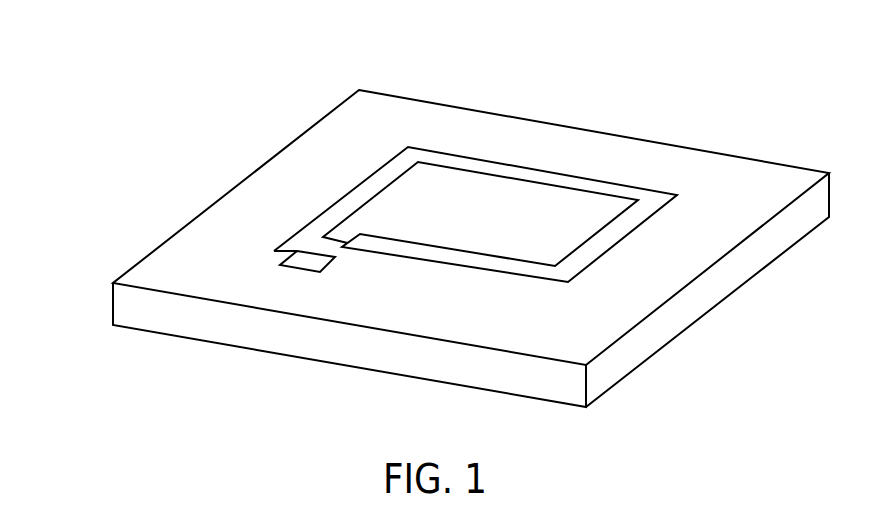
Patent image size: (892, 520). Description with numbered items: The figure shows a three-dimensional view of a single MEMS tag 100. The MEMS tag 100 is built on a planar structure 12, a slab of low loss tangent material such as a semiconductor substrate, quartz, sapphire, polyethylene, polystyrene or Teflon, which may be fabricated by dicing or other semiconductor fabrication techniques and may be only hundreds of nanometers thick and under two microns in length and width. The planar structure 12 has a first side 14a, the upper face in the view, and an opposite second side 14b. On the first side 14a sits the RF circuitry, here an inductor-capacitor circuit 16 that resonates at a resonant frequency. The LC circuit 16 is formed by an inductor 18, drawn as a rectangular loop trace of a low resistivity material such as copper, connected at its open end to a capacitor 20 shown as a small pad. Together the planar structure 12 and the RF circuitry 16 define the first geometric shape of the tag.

The MEMS tag 100 is at (435, 242).
The planar structure 12 is at (113, 302).
The first side 14a is at (751, 180).
The second side 14b is at (629, 398).
The inductor-capacitor circuit 16 is at (407, 212).
The inductor 18 is at (551, 170).
The capacitor 20 is at (298, 272).